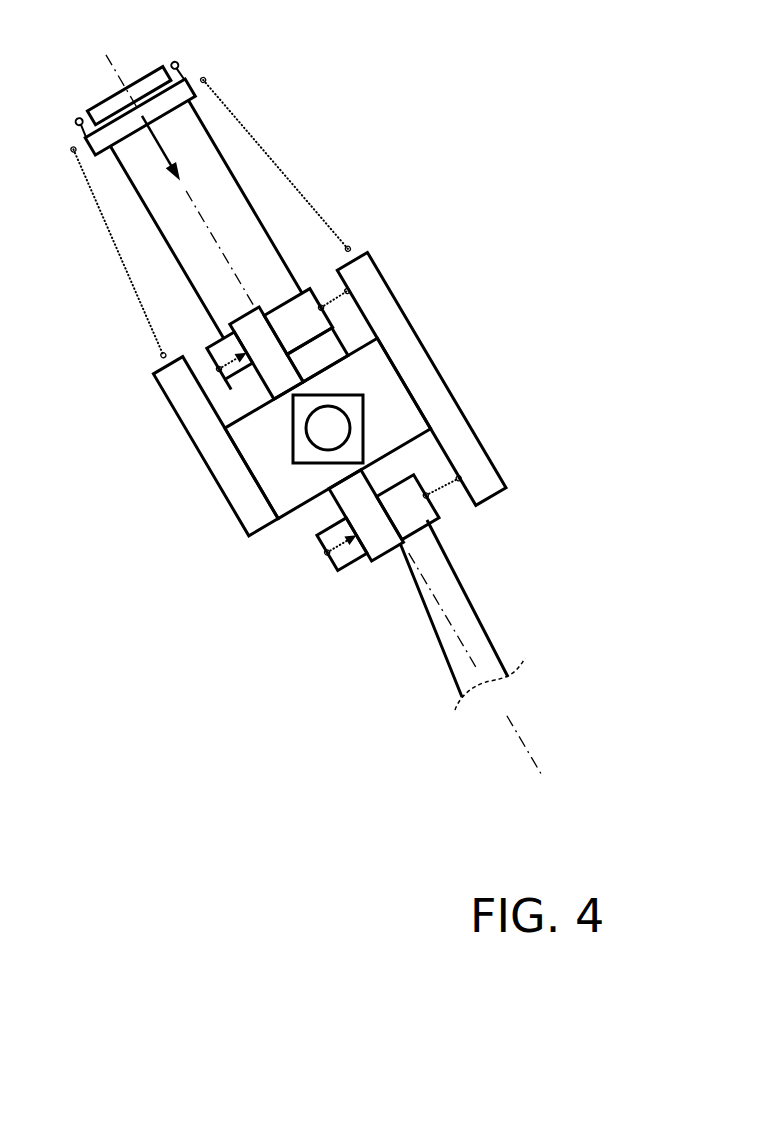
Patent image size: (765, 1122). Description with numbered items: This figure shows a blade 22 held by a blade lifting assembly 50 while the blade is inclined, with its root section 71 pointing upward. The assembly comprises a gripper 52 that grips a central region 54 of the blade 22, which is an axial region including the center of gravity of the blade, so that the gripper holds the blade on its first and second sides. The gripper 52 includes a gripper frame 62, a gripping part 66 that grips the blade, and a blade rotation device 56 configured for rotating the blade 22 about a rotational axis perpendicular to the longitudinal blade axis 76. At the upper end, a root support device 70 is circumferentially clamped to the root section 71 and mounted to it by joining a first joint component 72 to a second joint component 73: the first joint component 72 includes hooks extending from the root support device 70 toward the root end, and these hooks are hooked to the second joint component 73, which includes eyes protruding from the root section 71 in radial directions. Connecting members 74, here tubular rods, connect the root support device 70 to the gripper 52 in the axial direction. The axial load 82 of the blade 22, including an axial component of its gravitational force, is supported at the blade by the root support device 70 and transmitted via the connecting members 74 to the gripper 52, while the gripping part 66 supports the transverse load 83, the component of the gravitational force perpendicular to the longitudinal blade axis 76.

The blade 22 is at (490, 633).
The blade lifting assembly 50 is at (418, 88).
The gripper 52 is at (468, 335).
The central region 54 is at (340, 338).
The blade rotation device 56 is at (364, 421).
The gripper frame 62 is at (490, 455).
The gripping part 66 is at (215, 351).
The root support device 70 is at (198, 82).
The root section 71 is at (106, 160).
The first joint component 72 is at (185, 77).
The second joint component 73 is at (174, 66).
The connecting members 74 is at (130, 282).
The longitudinal blade axis 76 is at (502, 704).
The axial load 82 is at (165, 147).
The transverse load 83 is at (217, 372).